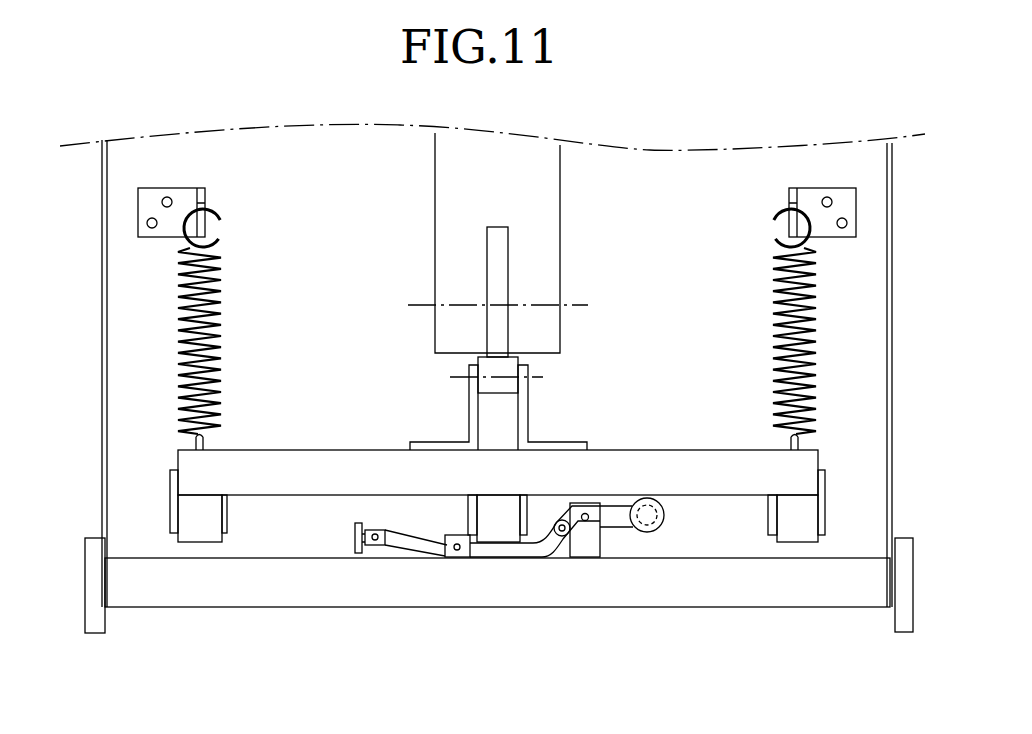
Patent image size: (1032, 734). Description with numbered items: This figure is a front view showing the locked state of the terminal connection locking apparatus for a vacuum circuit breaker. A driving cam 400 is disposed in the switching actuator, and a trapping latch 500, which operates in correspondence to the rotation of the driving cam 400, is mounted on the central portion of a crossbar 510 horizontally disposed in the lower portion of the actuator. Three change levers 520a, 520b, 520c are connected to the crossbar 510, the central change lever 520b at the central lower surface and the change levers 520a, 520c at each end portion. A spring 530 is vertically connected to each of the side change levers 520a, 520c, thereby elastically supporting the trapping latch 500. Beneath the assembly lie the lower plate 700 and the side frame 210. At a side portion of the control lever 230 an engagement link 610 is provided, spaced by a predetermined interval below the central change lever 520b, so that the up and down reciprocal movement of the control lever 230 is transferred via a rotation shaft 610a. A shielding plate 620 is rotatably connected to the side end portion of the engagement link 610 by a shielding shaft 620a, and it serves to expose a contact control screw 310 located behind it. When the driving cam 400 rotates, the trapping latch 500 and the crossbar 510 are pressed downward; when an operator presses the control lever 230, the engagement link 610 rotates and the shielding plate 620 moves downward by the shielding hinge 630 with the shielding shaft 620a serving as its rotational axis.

The side frame 210 is at (905, 618).
The control lever 230 is at (355, 535).
The contact control screw 310 is at (660, 527).
The driving cam 400 is at (487, 262).
The trapping latch 500 is at (528, 410).
The crossbar 510 is at (318, 466).
The change lever 520a is at (195, 538).
The central change lever 520b is at (498, 535).
The change lever 520c is at (803, 535).
The spring 530 is at (222, 332).
The engagement link 610 is at (400, 543).
The rotation shaft 610a is at (456, 550).
The shielding plate 620 is at (612, 525).
The shielding shaft 620a is at (585, 522).
The shielding hinge 630 is at (560, 536).
The lower plate 700 is at (773, 594).